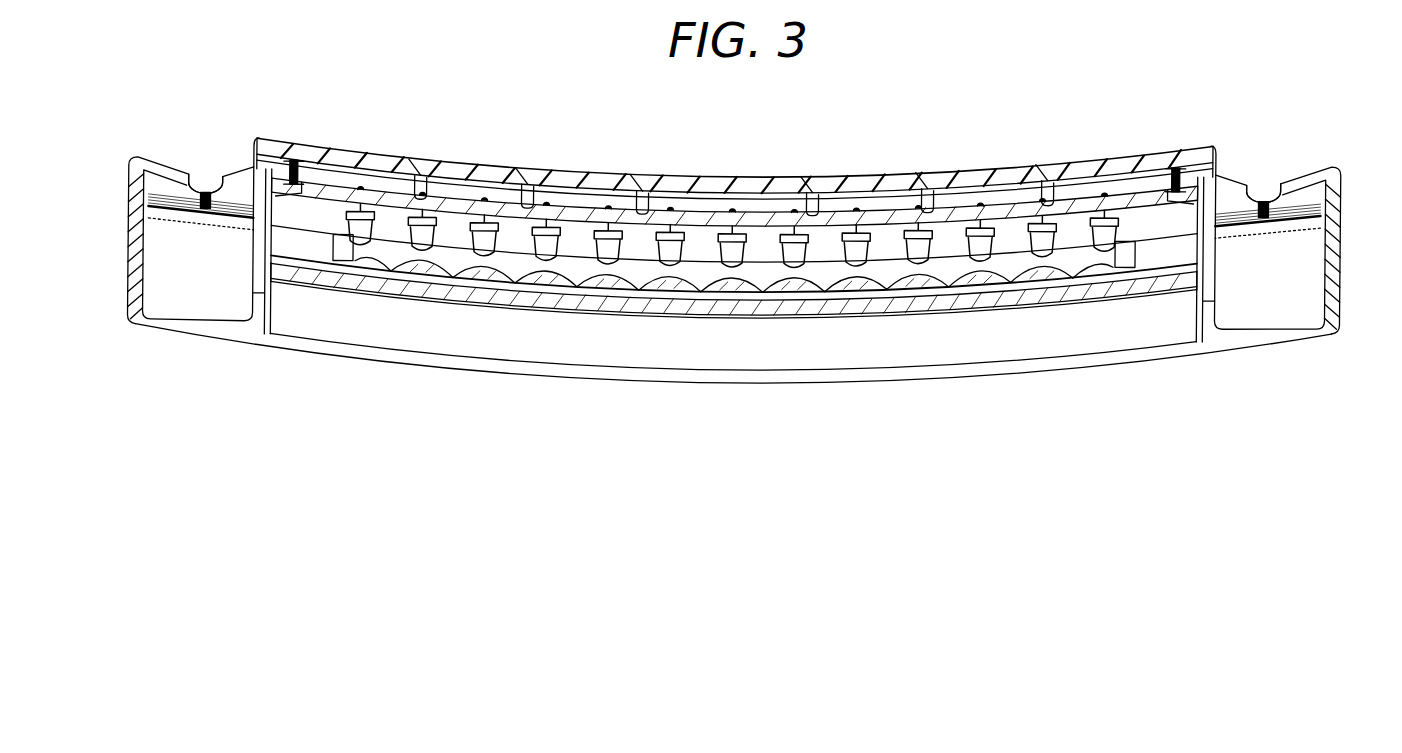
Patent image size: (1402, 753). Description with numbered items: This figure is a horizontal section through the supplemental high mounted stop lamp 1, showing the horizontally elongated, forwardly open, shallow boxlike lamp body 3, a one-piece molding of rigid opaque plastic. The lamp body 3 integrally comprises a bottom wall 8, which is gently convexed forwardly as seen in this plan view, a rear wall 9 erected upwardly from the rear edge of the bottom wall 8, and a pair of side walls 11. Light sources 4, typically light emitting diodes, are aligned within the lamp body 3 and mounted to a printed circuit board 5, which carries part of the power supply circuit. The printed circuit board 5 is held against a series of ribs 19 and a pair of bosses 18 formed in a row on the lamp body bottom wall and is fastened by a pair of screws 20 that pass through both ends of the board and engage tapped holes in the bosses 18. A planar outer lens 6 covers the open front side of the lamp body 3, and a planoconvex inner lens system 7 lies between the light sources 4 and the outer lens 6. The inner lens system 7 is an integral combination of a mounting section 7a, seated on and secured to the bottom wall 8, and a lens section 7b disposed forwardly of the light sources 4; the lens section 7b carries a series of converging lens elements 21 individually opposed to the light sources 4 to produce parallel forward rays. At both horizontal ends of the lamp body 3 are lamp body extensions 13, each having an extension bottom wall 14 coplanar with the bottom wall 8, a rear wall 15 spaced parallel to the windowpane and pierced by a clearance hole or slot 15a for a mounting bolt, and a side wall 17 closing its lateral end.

The supplemental high mounted stop lamp 1 is at (890, 148).
The lamp body 3 is at (613, 178).
The light sources 4 is at (350, 256).
The printed circuit board 5 is at (761, 216).
The outer lens 6 is at (750, 357).
The inner lens system 7 is at (818, 299).
The mounting section 7a is at (333, 247).
The lens section 7b is at (665, 291).
The bottom wall 8 is at (331, 211).
The rear wall 9 is at (573, 176).
The side walls 11 is at (258, 286).
The lamp body extensions 13 is at (147, 162).
The extension bottom wall 14 is at (176, 313).
The extension rear wall 15 is at (187, 212).
The clearance hole or slot 15a is at (203, 180).
The extension side wall 17 is at (127, 228).
The bosses 18 is at (312, 164).
The ribs 19 is at (520, 202).
The screws 20 is at (305, 196).
The converging lens elements 21 is at (453, 271).